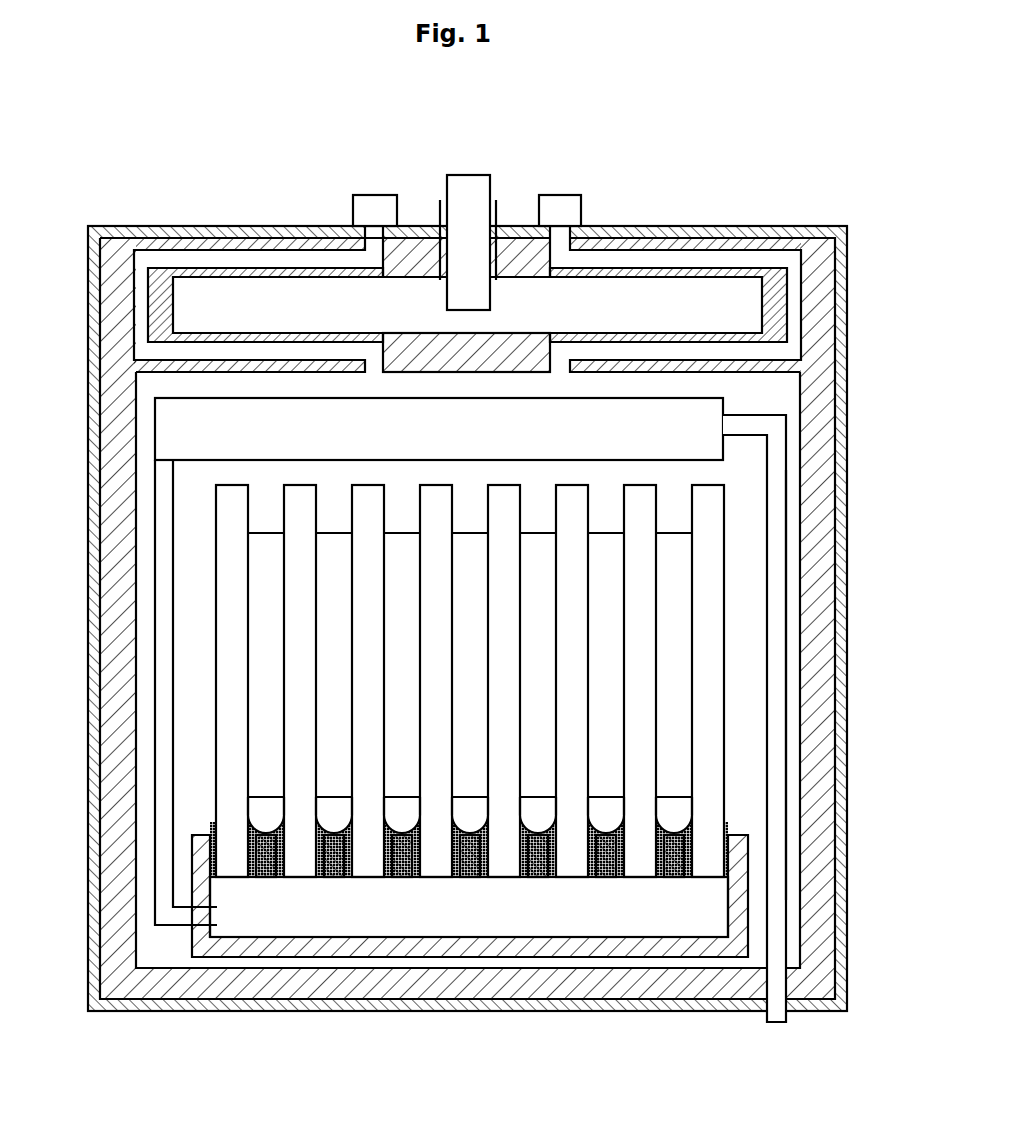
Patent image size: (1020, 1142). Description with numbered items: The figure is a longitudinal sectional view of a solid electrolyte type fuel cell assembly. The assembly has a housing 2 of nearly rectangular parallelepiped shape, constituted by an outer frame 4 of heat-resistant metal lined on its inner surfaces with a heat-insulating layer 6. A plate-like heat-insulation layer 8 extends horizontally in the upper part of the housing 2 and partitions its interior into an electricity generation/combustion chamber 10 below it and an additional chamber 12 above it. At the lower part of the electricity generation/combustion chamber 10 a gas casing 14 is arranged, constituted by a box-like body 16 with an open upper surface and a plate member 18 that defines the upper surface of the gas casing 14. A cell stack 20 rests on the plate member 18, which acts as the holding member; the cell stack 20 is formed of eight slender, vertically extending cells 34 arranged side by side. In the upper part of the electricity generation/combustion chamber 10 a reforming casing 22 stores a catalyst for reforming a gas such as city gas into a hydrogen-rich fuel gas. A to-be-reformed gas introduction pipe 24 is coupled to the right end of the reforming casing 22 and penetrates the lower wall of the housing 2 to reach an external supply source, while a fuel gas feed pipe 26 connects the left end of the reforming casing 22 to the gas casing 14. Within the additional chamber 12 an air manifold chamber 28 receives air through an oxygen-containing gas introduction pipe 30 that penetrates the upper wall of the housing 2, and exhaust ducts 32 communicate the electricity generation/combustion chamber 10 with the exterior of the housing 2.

The housing 2 is at (501, 618).
The outer frame 4 is at (848, 515).
The heat-insulating layer 6 is at (827, 740).
The heat-insulation layer 8 is at (217, 373).
The electricity generation/combustion chamber 10 is at (766, 397).
The additional chamber 12 is at (203, 255).
The gas casing 14 is at (305, 958).
The body 16 is at (525, 946).
The plate member 18 is at (752, 853).
The cell stack 20 is at (204, 580).
The reforming casing 22 is at (693, 398).
The to-be-reformed gas introduction pipe 24 is at (786, 470).
The fuel gas feed pipe 26 is at (155, 682).
The air manifold chamber 28 is at (702, 280).
The oxygen-containing gas introduction pipe 30 is at (492, 185).
The exhaust duct 32 is at (280, 257).
The cell 34 is at (727, 625).